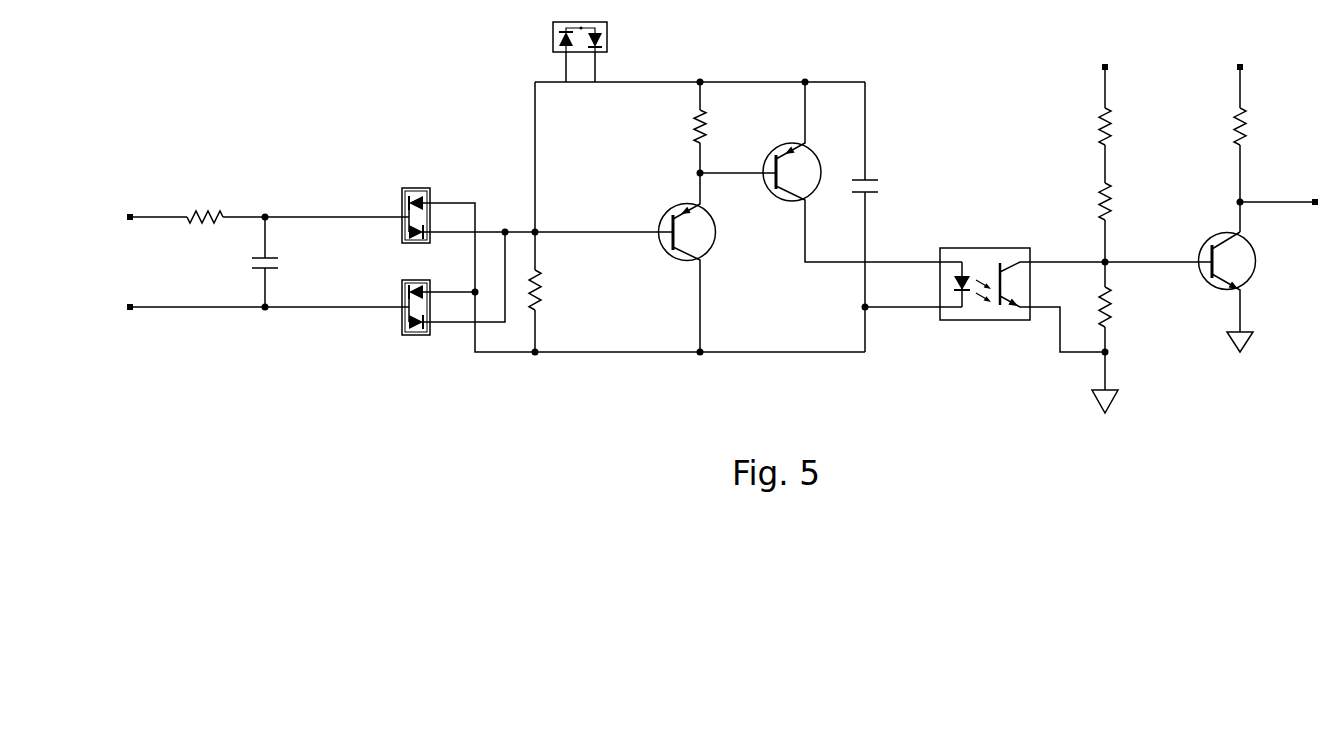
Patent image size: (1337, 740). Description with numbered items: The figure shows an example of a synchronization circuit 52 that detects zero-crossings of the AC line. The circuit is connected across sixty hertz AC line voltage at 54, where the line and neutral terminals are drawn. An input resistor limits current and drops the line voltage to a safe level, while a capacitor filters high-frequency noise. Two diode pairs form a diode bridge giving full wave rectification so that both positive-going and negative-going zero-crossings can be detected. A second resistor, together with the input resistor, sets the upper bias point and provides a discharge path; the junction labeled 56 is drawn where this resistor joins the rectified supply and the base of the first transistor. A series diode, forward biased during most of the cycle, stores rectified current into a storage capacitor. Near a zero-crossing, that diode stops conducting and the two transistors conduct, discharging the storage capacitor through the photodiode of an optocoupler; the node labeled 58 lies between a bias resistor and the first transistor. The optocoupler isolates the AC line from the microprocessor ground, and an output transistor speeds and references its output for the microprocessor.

The synchronization circuit 52 is at (186, 110).
The AC line voltage connection 54 is at (131, 221).
The node 56 is at (538, 228).
The node 58 is at (697, 170).